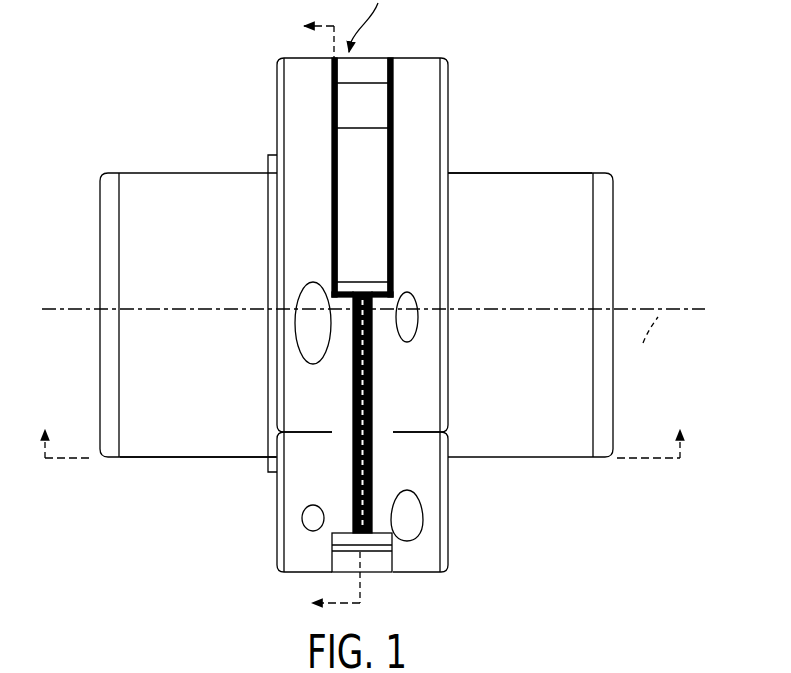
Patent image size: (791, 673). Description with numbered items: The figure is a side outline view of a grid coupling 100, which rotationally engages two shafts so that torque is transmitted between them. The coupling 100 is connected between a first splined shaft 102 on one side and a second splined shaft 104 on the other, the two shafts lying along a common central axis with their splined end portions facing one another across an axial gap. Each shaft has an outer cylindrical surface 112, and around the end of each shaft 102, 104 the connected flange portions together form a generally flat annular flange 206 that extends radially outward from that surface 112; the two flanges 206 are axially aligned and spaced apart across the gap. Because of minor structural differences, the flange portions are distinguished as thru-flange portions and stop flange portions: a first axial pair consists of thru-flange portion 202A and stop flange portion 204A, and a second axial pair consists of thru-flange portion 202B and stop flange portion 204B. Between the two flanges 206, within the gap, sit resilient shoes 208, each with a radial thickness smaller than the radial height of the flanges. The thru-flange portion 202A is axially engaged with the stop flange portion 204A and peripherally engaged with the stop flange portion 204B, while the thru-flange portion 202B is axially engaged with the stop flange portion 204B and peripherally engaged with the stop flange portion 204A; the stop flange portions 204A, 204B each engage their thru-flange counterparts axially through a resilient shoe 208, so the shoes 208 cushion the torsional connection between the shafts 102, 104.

The coupling 100 is at (632, 87).
The first splined shaft 102 is at (143, 225).
The second splined shaft 104 is at (570, 250).
The outer cylindrical surface 112 is at (532, 172).
The thru-flange portion 202A is at (423, 122).
The thru-flange portion 202B is at (292, 487).
The stop flange portion 204A is at (302, 103).
The stop flange portion 204B is at (423, 478).
The annular flange 206 is at (260, 70).
The resilient shoe 208 is at (370, 75).